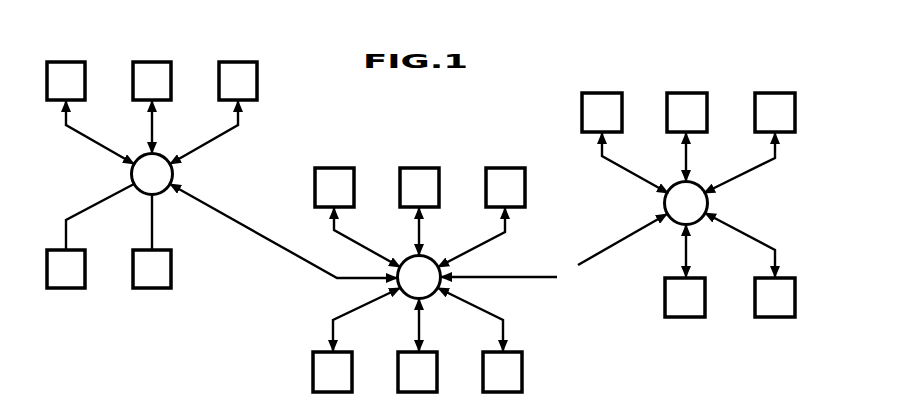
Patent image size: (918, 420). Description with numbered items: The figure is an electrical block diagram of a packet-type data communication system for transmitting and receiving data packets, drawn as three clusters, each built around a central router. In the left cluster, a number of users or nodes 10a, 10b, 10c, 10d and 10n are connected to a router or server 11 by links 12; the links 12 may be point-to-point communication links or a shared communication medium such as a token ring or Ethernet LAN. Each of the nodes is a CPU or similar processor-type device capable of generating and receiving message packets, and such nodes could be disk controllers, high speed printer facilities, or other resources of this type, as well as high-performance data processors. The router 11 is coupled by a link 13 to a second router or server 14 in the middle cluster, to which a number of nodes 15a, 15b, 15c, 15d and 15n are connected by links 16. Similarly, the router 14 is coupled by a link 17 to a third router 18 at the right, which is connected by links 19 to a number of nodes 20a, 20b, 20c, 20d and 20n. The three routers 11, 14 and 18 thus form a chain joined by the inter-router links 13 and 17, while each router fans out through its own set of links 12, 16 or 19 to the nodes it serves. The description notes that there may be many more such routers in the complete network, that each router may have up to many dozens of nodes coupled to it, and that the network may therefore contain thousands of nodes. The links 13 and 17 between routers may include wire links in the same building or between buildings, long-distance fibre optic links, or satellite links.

The node 10a is at (238, 62).
The node 10b is at (148, 62).
The node 10c is at (63, 62).
The node 10d is at (62, 288).
The node 10n is at (171, 270).
The router 11 is at (131, 167).
The link 12 is at (204, 147).
The link 13 is at (226, 213).
The router 14 is at (396, 285).
The node 15a is at (508, 168).
The node 15b is at (424, 168).
The node 15c is at (333, 168).
The node 15d is at (313, 372).
The node 15n is at (522, 380).
The link 16 is at (463, 250).
The link 17 is at (603, 252).
The router 18 is at (708, 208).
The link 19 is at (746, 172).
The node 20a is at (778, 93).
The node 20b is at (688, 93).
The node 20c is at (598, 93).
The node 20d is at (688, 317).
The node 20n is at (770, 317).